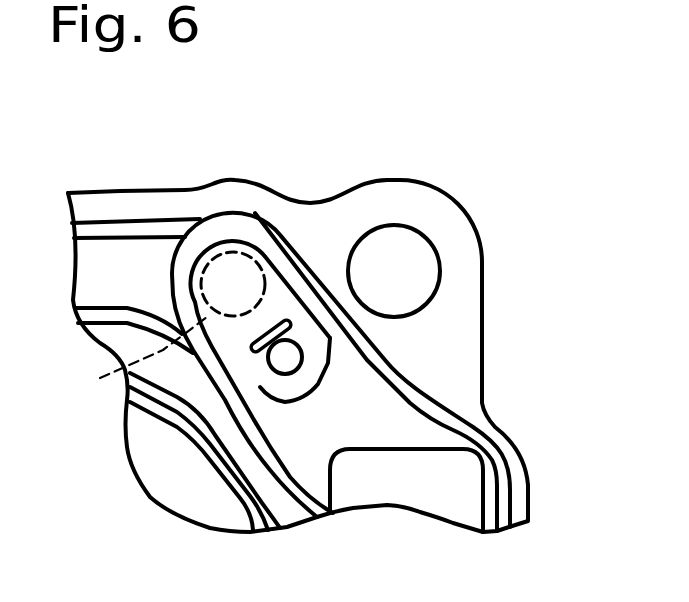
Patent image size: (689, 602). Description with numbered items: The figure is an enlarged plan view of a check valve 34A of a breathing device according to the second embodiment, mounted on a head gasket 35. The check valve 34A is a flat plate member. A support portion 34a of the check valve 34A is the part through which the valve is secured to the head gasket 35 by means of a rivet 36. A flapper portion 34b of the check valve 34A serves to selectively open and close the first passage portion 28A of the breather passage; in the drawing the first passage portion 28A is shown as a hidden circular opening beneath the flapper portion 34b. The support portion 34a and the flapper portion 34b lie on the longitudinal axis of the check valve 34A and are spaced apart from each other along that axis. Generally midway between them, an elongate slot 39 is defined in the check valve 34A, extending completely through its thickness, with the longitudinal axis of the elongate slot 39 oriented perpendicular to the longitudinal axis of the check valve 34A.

The first passage portion 28A is at (121, 358).
The check valve 34A is at (296, 286).
The support portion 34a is at (275, 383).
The flapper portion 34b is at (232, 250).
The head gasket 35 is at (493, 423).
The rivet 36 is at (288, 357).
The elongate slot 39 is at (252, 349).